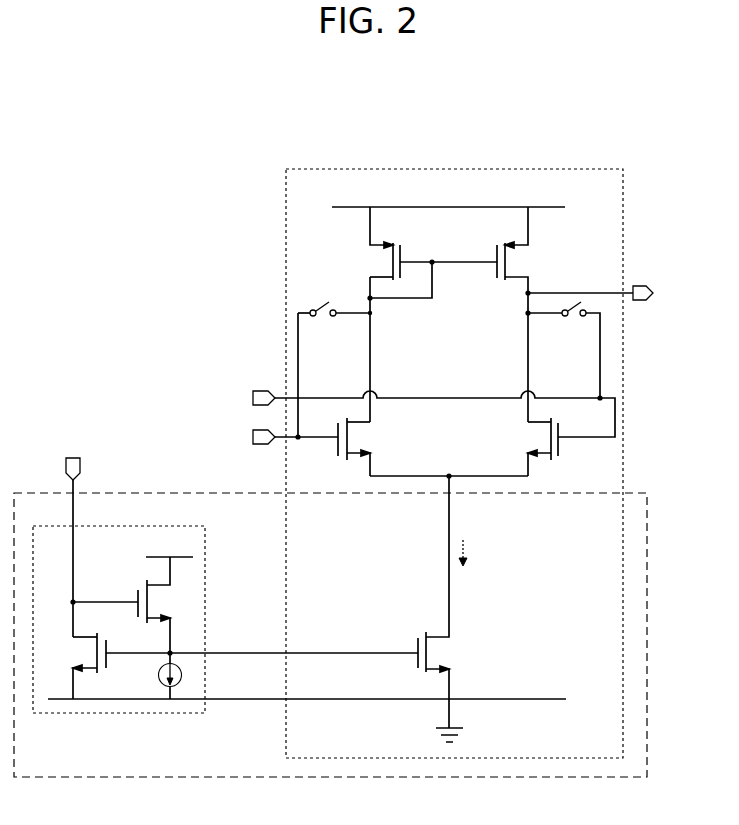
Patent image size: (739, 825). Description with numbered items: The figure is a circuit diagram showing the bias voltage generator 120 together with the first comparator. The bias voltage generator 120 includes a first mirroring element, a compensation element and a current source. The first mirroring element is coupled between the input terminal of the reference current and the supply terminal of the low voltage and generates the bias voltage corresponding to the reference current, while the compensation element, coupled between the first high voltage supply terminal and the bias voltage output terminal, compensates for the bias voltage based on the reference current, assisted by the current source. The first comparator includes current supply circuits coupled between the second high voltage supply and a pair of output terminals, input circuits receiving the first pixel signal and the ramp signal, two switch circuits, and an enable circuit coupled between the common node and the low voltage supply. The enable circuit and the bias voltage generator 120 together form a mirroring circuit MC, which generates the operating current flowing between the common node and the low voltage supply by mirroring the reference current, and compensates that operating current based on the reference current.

The bias voltage generator 120 is at (158, 526).
The mirroring circuit MC is at (647, 630).